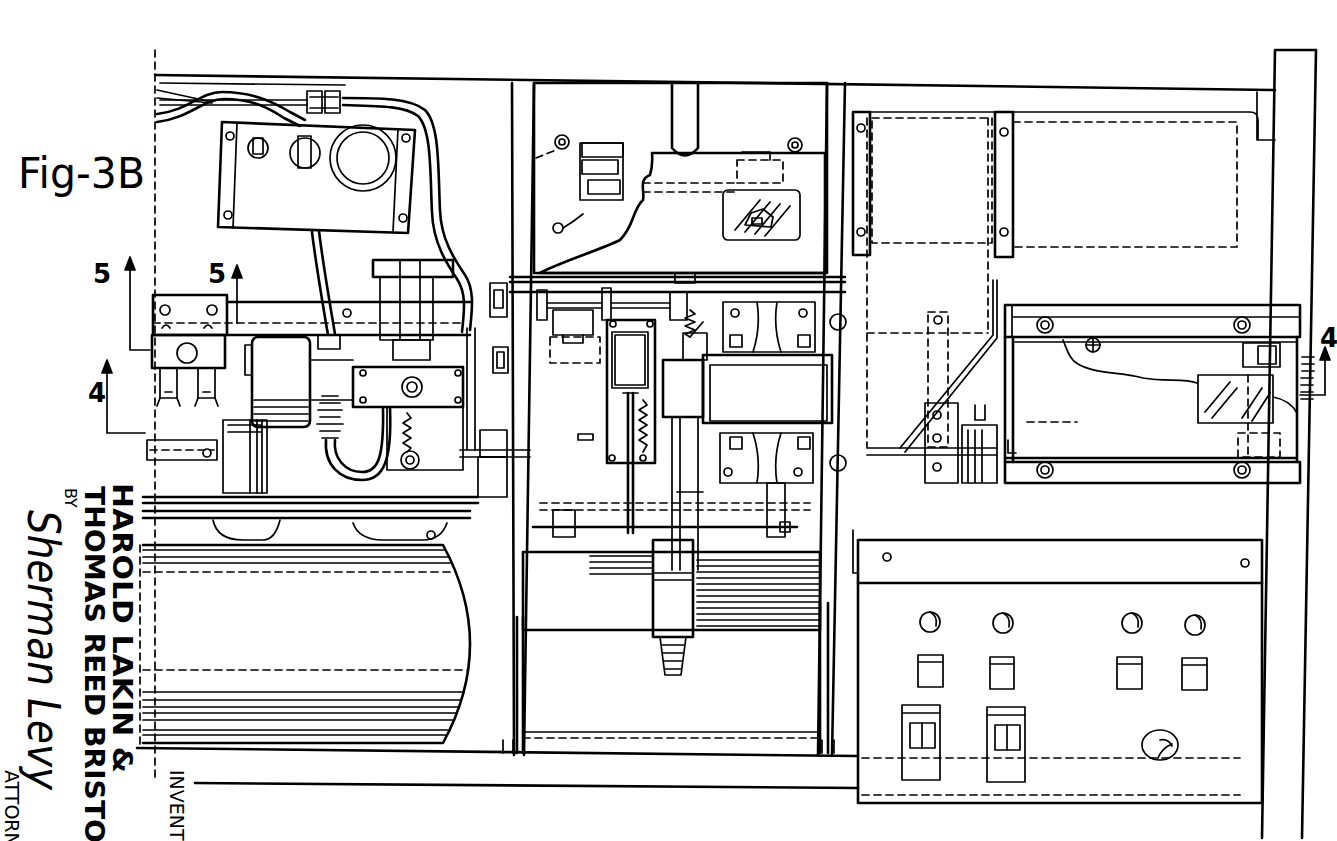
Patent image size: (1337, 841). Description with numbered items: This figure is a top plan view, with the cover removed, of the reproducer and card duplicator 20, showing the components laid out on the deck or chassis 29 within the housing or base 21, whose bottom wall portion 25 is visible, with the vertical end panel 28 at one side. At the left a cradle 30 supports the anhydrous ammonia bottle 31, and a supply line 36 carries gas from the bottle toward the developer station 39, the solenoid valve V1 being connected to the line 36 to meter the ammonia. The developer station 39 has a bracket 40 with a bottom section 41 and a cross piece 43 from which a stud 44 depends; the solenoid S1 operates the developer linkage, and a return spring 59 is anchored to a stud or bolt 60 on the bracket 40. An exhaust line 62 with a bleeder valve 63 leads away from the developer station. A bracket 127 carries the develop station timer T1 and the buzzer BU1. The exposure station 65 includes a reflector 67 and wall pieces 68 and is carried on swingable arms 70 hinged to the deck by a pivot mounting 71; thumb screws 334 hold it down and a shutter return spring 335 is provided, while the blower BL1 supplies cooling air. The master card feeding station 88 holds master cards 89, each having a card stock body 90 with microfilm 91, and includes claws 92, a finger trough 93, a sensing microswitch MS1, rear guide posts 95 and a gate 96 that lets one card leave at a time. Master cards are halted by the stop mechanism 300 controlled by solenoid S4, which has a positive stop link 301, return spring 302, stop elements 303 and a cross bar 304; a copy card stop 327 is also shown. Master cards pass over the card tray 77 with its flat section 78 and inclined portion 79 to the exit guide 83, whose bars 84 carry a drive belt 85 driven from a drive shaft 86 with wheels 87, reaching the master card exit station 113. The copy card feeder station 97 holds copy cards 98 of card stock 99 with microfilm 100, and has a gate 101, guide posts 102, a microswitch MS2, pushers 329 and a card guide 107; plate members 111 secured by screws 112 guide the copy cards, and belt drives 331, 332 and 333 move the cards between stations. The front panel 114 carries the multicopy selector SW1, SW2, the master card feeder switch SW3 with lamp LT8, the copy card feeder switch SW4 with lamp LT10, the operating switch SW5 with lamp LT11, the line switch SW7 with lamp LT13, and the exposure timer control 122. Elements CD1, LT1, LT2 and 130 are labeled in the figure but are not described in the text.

The reproducer and card duplicator 20 is at (1322, 74).
The housing or base 21 is at (407, 785).
The bottom wall portion 25 is at (496, 722).
The panel 28 is at (1280, 651).
The chassis 29 is at (147, 459).
The cradle 30 is at (440, 732).
The bottle 31 is at (378, 632).
The conduit or line 36 is at (170, 127).
The developer station 39 is at (427, 426).
The bracket or body member 40 is at (396, 413).
The bottom section 41 is at (428, 413).
The cross piece 43 is at (392, 393).
The stud 44 is at (424, 387).
The return spring 59 is at (400, 460).
The stud or bolt 60 is at (416, 470).
The exhaust line 62 is at (168, 92).
The bleeder valve 63 is at (338, 92).
The exposure station 65 is at (797, 400).
The reflector 67 is at (802, 384).
The wall pieces 68 is at (738, 350).
The swingable arms 70 is at (553, 362).
The pivot pin or shaft mounting 71 is at (497, 284).
The card tray 77 is at (522, 584).
The flat section 78 is at (602, 549).
The inclined portion 79 is at (594, 620).
The master card exit guide 83 is at (653, 571).
The bars or elements 84 is at (700, 541).
The drive belt 85 is at (675, 496).
The drive shaft 86 is at (618, 306).
The wheels 87 is at (588, 292).
The master card feeding station 88 is at (797, 100).
The master cards 89 is at (704, 172).
The main body portion 90 is at (625, 256).
The microfilm 91 is at (778, 234).
The claws 92 is at (608, 160).
The finger trough 93 is at (690, 124).
The rear guide posts 95 is at (566, 136).
The gate 96 is at (680, 272).
The copy card feeder station 97 is at (1153, 350).
The copy cards 98 is at (1193, 361).
The card stock 99 is at (1116, 346).
The microfilm 100 is at (1198, 397).
The gate 101 is at (1016, 448).
The guide posts 102 is at (1046, 316).
The card guide 107 is at (960, 416).
The plate members 111 is at (246, 304).
The screws 112 is at (205, 458).
The master card exit station 113 is at (745, 738).
The panel or plate member 114 is at (1082, 637).
The exposure timer control 122 is at (1169, 752).
The bracket or support member 127 is at (280, 215).
The switch 130 is at (258, 160).
The master card stop mechanism 300 is at (568, 536).
The positive stop link 301 is at (626, 484).
The return spring 302 is at (638, 418).
The positive stop elements 303 is at (598, 432).
The cross bar 304 is at (758, 593).
The copy card stop 327 is at (492, 356).
The claws or pushers 329 is at (1243, 360).
The belt drive 331 is at (950, 545).
The belt drive 332 is at (768, 538).
The drive belts 333 is at (344, 514).
The thumb screws 334 is at (846, 324).
The exposure station shutter return spring 335 is at (708, 334).
The blower BL1 is at (1057, 137).
The buzzer BU1 is at (308, 168).
The capacitor CD1 is at (188, 344).
The lamp LT1 is at (215, 386).
The lamp LT2 is at (177, 424).
The master card feeder empty lamp LT8 is at (920, 624).
The copy card empty lamp LT10 is at (1012, 620).
The lamp LT11 is at (1138, 618).
The lamp LT13 is at (1204, 624).
The sensing microswitch MS1 is at (583, 217).
The copy card sensing microswitch MS2 is at (1094, 338).
The solenoid S1 is at (370, 282).
The solenoid S4 is at (641, 369).
The multicopy selector SW1 is at (939, 724).
The multicopy selector SW2 is at (1024, 728).
The master card feeder switch SW3 is at (918, 674).
The copy card feeder switch SW4 is at (1002, 676).
The operating switch SW5 is at (1130, 686).
The line switch SW7 is at (1207, 682).
The develop station timer T1 is at (363, 158).
The solenoid valve V1 is at (299, 382).